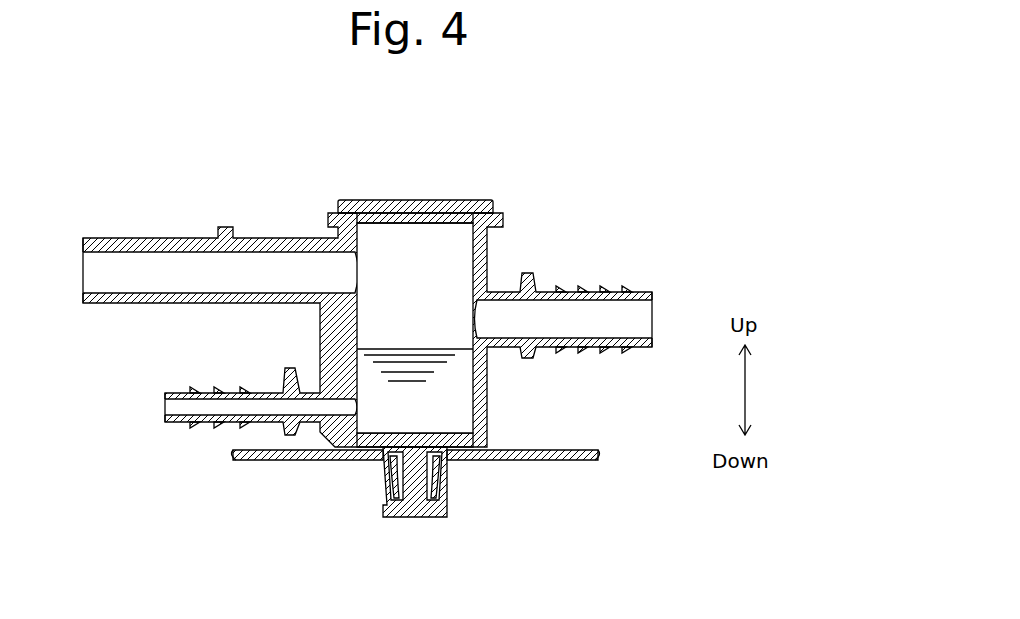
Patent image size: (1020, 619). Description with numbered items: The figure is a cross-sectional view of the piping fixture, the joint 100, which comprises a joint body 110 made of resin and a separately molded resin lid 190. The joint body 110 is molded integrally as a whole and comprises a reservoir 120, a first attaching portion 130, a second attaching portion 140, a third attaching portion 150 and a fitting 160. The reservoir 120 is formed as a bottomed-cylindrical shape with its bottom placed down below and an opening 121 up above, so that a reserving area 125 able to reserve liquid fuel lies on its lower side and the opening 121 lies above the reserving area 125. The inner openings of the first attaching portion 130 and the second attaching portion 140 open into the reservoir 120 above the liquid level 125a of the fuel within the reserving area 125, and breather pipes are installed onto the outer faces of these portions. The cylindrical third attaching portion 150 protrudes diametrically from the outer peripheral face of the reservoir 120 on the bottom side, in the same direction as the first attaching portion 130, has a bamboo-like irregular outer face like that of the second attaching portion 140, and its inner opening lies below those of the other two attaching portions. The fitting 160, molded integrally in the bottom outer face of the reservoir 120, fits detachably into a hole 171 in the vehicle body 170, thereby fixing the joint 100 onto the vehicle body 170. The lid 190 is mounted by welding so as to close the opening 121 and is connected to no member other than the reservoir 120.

The joint 100 is at (378, 356).
The joint body 110 is at (367, 315).
The reservoir 120 is at (488, 398).
The opening 121 is at (350, 213).
The reserving area 125 is at (370, 334).
The liquid level 125a is at (430, 347).
The first attaching portion 130 is at (150, 238).
The second attaching portion 140 is at (626, 290).
The third attaching portion 150 is at (232, 430).
The fitting 160 is at (451, 518).
The vehicle body 170 is at (572, 462).
The hole 171 is at (437, 468).
The lid 190 is at (478, 200).